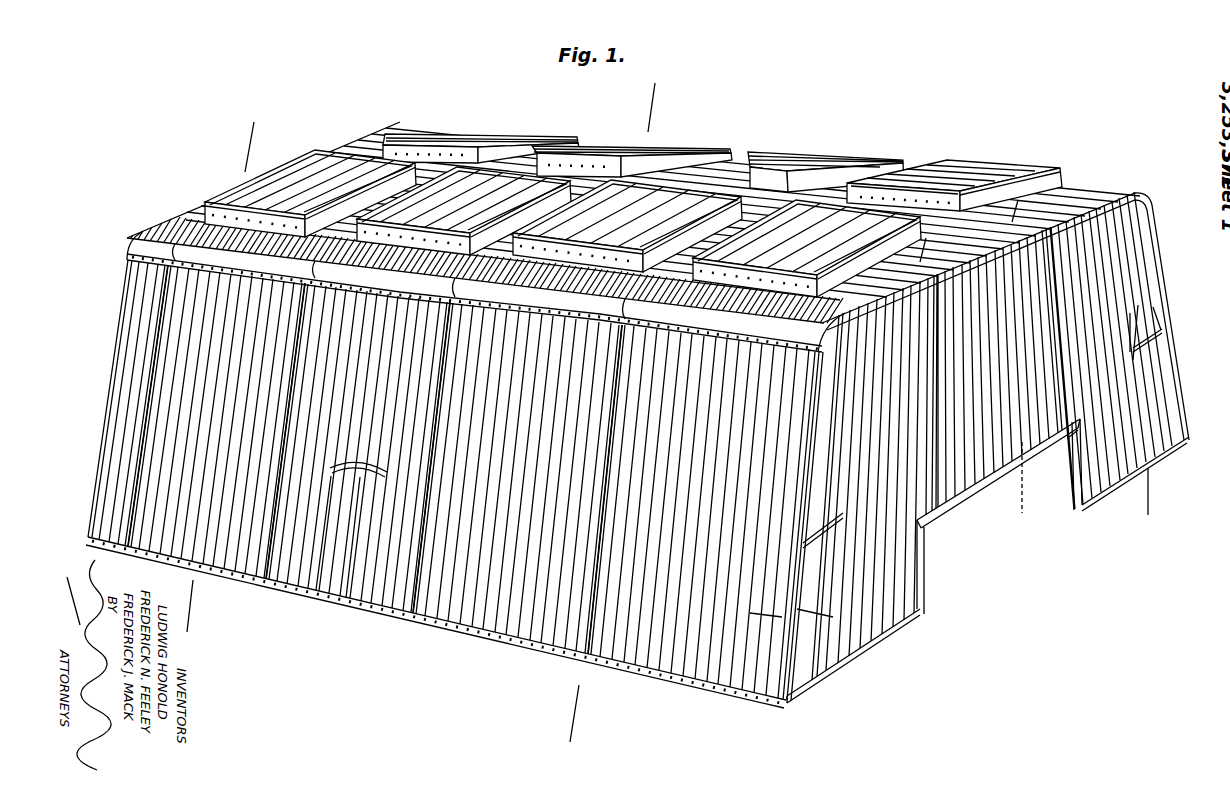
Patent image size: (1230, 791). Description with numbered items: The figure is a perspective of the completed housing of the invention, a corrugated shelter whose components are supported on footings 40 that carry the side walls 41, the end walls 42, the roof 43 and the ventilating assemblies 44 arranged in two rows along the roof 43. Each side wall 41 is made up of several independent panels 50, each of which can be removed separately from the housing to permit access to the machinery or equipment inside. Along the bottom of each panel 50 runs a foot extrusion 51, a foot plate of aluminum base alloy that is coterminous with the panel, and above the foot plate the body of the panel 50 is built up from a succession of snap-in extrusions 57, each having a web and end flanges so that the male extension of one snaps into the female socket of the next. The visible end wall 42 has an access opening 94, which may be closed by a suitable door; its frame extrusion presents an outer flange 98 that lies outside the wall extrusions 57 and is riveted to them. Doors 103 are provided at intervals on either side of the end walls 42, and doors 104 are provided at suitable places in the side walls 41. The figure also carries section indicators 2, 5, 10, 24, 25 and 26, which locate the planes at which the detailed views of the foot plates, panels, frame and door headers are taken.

The section line 2- 2 is at (630, 108).
The section line 5- 5 is at (940, 248).
The section line 10- 10 is at (224, 147).
The section line 24- 24 is at (1031, 450).
The section line 25- 25 is at (1141, 488).
The section line 26- 26 is at (1152, 333).
The footings 40 is at (692, 686).
The side wall 41 is at (489, 598).
The end wall 42 is at (921, 609).
The roof 43 is at (1080, 192).
The ventilating assembly 44 is at (976, 166).
The panel 50 is at (743, 670).
The foot extrusion 51 is at (652, 672).
The snap-in extrusion 57 is at (513, 617).
The access opening 94 is at (990, 518).
The outer flange 98 is at (951, 503).
The door 103 is at (1143, 437).
The door 104 is at (347, 565).